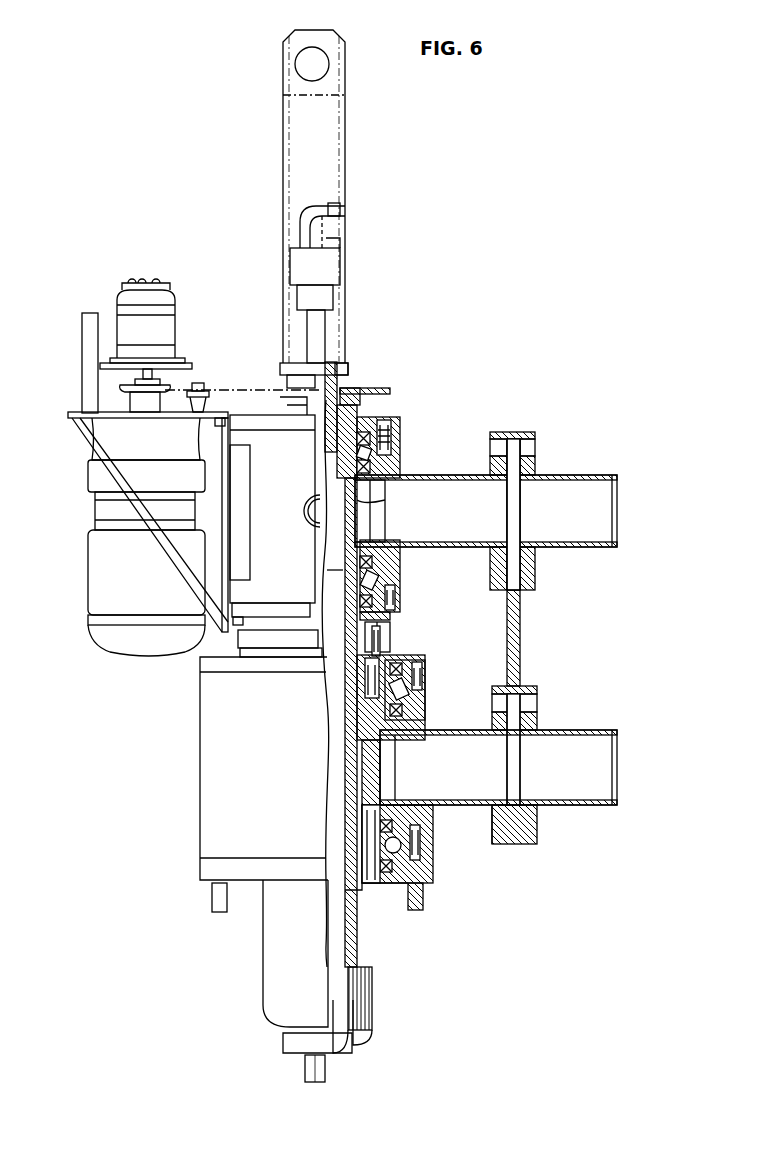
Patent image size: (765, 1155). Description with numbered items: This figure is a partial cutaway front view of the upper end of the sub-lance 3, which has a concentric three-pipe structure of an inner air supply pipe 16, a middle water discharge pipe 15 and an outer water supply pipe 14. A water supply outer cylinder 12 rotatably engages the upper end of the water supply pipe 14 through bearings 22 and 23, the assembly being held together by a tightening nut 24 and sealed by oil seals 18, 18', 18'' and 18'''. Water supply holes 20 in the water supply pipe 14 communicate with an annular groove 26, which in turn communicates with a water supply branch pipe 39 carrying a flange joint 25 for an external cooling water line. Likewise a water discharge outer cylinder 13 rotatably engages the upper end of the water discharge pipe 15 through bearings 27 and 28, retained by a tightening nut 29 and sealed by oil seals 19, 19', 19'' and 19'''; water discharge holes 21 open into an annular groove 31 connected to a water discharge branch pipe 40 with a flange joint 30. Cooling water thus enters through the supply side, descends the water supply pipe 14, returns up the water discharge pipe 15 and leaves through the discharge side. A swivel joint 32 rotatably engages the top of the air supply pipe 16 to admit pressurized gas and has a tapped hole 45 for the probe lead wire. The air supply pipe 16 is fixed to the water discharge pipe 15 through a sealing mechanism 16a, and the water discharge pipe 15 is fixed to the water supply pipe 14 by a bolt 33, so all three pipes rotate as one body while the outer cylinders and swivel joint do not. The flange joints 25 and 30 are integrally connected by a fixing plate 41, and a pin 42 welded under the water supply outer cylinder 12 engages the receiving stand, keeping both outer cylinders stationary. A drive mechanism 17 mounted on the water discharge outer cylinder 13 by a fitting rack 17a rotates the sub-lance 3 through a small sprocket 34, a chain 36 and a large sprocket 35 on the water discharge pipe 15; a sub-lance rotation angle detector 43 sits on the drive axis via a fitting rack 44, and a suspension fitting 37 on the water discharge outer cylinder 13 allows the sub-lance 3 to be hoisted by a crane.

The sub-lance 3 is at (256, 1011).
The water supply outer cylinder 12 is at (200, 732).
The water discharge outer cylinder 13 is at (248, 435).
The water supply pipe 14 is at (350, 700).
The water discharge pipe 15 is at (392, 640).
The air supply pipe 16 is at (325, 325).
The sealing mechanism 16a is at (335, 400).
The drive mechanism 17 is at (130, 605).
The fitting rack 17a is at (90, 445).
The oil seal 18 is at (417, 676).
The oil seal 18' is at (330, 764).
The oil seal 18'' is at (415, 844).
The oil seal 18''' is at (397, 914).
The oil seal 19 is at (395, 430).
The oil seal 19' is at (306, 485).
The oil seal 19'' is at (313, 555).
The oil seal 19''' is at (402, 584).
The water supply holes 20 is at (372, 790).
The water discharge holes 21 is at (357, 512).
The bearing 22 is at (360, 712).
The bearing 23 is at (410, 862).
The tightening nut 24 is at (355, 870).
The flange joint 25 is at (505, 844).
The annular groove 26 is at (425, 730).
The bearing 27 is at (398, 455).
The bearing 28 is at (388, 590).
The tightening nut 29 is at (360, 395).
The flange joint 30 is at (497, 432).
The annular groove 31 is at (372, 485).
The swivel joint 32 is at (340, 265).
The bolt 33 is at (400, 660).
The small sprocket 34 is at (135, 405).
The large sprocket 35 is at (285, 388).
The chain 36 is at (200, 385).
The suspension fitting 37 is at (283, 143).
The water supply branch pipe 39 is at (494, 832).
The water discharge branch pipe 40 is at (420, 475).
The fixing plate 41 is at (520, 630).
The pin 42 is at (212, 897).
The sub-lance rotation angle detector 43 is at (125, 285).
The fitting rack 44 is at (82, 345).
The tapped hole 45 is at (332, 206).